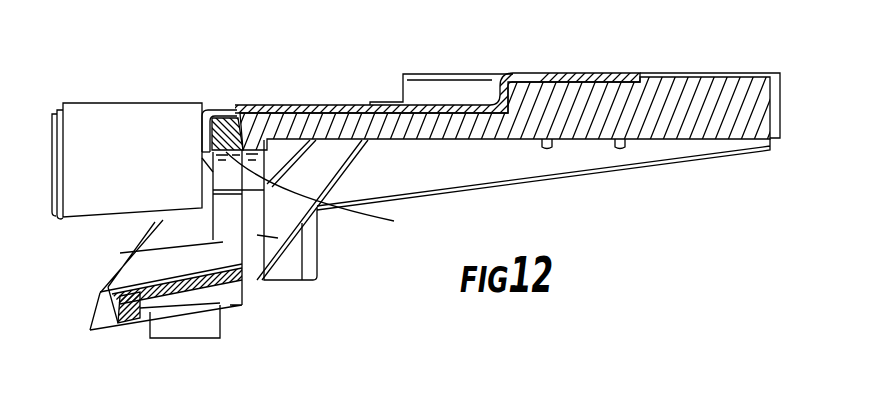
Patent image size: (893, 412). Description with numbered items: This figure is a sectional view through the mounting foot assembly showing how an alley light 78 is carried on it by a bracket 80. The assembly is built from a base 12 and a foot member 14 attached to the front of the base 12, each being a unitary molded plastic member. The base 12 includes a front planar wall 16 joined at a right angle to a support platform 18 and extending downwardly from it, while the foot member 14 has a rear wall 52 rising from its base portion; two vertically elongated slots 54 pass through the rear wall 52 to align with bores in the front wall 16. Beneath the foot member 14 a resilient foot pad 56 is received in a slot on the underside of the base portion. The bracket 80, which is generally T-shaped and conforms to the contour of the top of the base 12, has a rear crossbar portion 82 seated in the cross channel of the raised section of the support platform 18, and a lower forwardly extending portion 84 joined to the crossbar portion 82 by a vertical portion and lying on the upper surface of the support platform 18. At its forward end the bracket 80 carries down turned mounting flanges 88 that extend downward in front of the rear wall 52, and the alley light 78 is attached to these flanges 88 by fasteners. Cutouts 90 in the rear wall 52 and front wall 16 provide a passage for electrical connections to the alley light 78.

The base 12 is at (506, 145).
The foot member 14 is at (242, 305).
The front planar wall 16 is at (257, 233).
The support platform 18 is at (331, 125).
The rear wall 52 is at (223, 243).
The vertically elongated slots 54 is at (117, 321).
The foot pad 56 is at (210, 323).
The alley light 78 is at (127, 132).
The bracket 80 is at (253, 113).
The rear crossbar portion 82 is at (576, 71).
The lower forwardly extending portion 84 is at (300, 105).
The down turned mounting flanges 88 is at (209, 106).
The cutouts 90 is at (322, 194).